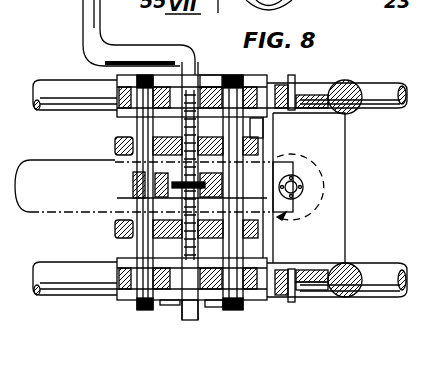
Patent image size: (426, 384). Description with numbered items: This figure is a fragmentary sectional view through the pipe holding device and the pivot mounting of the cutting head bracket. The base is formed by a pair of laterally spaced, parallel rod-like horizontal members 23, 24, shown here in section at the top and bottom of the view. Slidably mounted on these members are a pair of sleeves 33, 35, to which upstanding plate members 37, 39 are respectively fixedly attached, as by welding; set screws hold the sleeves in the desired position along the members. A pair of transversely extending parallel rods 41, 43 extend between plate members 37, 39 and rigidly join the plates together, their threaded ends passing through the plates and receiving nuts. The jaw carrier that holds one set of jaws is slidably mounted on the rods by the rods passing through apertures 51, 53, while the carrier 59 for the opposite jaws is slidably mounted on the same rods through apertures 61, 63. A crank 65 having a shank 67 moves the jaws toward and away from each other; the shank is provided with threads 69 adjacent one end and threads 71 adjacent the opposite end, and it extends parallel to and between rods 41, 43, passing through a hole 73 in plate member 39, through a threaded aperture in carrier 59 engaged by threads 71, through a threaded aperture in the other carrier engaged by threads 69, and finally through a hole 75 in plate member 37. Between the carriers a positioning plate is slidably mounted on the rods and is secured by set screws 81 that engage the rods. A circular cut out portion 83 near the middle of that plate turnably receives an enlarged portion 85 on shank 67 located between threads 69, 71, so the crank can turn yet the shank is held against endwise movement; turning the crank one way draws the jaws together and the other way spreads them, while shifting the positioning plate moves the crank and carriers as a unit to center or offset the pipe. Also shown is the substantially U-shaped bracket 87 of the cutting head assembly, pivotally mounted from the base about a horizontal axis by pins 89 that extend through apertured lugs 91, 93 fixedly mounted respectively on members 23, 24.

The rod-like horizontal member 23 is at (371, 299).
The rod-like horizontal member 24 is at (385, 112).
The sleeve 33 is at (213, 307).
The sleeve 35 is at (214, 75).
The plate member 37 is at (117, 301).
The plate member 39 is at (112, 116).
The transversely extending parallel rod 41 is at (138, 247).
The transversely extending parallel rod 43 is at (255, 244).
The aperture 51 is at (113, 227).
The aperture 53 is at (288, 224).
The carrier 59 is at (270, 151).
The aperture 61 is at (252, 132).
The aperture 63 is at (113, 142).
The crank 65 is at (78, 33).
The shank 67 is at (187, 325).
The threads 69 is at (213, 251).
The threads 71 is at (200, 170).
The hole 73 is at (187, 78).
The hole 75 is at (170, 303).
The set screw 81 is at (108, 186).
The circular cut out portion 83 is at (150, 203).
The enlarged portion 85 is at (188, 175).
The U-shaped bracket 87 is at (335, 246).
The pin 89 is at (296, 76).
The apertured lug 91 is at (320, 304).
The apertured lug 93 is at (322, 88).